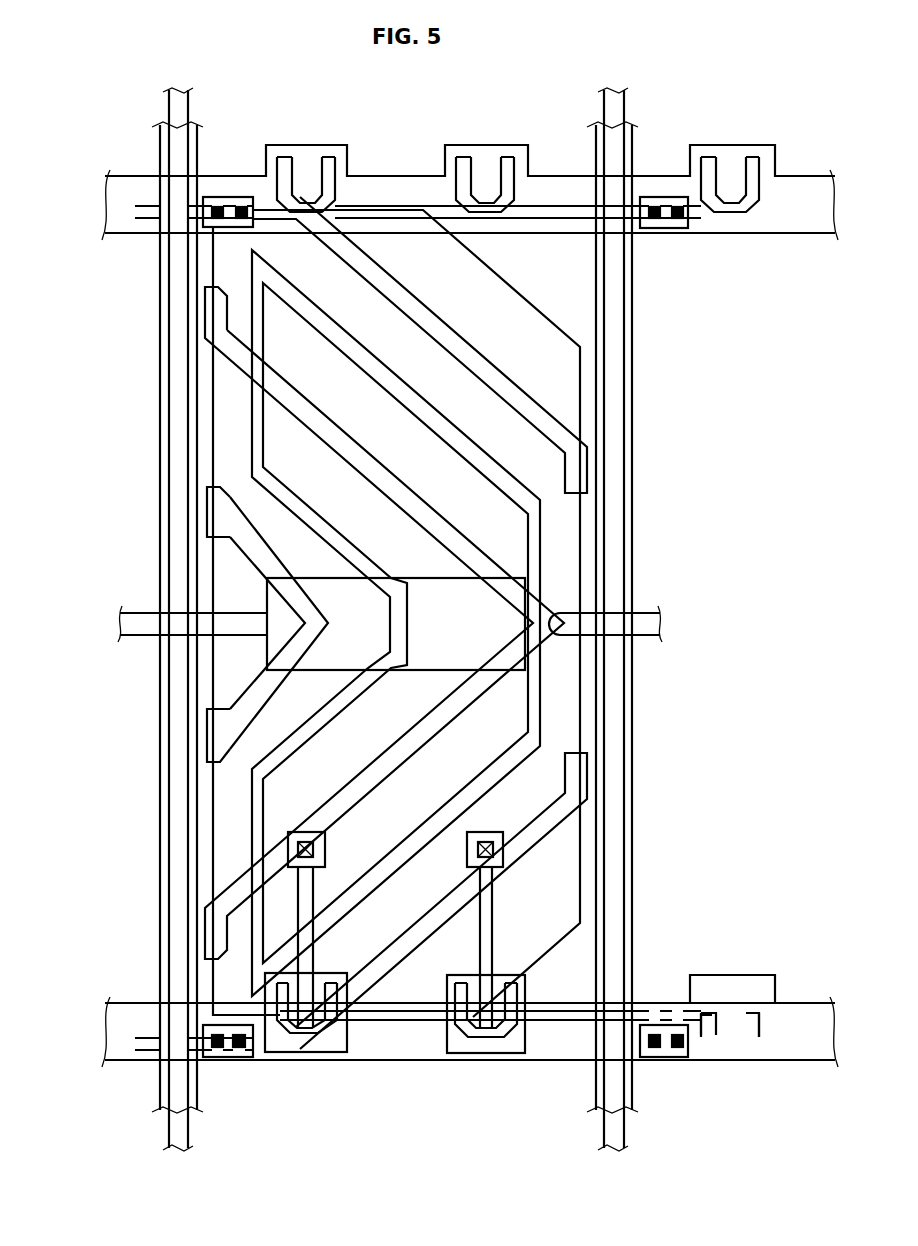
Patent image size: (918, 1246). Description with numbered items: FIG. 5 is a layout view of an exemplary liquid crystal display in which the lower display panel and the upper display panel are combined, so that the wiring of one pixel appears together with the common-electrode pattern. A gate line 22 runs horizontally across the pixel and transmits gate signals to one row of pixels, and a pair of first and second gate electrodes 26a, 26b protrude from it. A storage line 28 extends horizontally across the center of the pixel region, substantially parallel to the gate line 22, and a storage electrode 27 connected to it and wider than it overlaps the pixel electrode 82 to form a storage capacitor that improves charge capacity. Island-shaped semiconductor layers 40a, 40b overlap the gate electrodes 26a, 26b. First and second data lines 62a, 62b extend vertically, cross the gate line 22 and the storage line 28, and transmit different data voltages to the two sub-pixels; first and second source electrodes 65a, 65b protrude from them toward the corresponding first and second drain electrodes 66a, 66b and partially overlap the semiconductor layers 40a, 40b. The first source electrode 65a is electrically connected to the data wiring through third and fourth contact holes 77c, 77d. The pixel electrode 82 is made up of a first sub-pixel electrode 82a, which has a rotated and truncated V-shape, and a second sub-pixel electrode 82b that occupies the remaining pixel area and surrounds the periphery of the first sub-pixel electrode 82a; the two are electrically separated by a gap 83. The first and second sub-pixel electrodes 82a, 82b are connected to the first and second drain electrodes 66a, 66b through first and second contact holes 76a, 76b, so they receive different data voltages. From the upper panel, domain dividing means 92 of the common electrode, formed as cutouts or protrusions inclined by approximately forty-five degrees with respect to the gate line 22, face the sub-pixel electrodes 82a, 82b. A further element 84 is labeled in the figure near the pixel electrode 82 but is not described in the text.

The gate line 22 is at (445, 1062).
The first gate electrode 26a is at (330, 975).
The second gate electrode 26b is at (447, 990).
The storage electrode 27 is at (413, 672).
The storage line 28 is at (660, 640).
The first semiconductor layer 40a is at (285, 1053).
The second semiconductor layer 40b is at (495, 1053).
The first data line 62a is at (160, 330).
The second data line 62b is at (632, 330).
The first source electrode 65a is at (340, 1050).
The second source electrode 65b is at (520, 1053).
The first drain electrode 66a is at (298, 900).
The second drain electrode 66b is at (492, 905).
The first contact hole 76a is at (288, 850).
The second contact hole 76b is at (503, 850).
The third contact hole 77c is at (215, 1057).
The fourth contact hole 77d is at (240, 1057).
The pixel electrode 82 is at (52, 520).
The first sub-pixel electrode 82a is at (205, 545).
The second sub-pixel electrode 82b is at (205, 515).
The gap 83 is at (405, 393).
The connection 84 is at (213, 1010).
The domain dividing means 92 is at (580, 362).